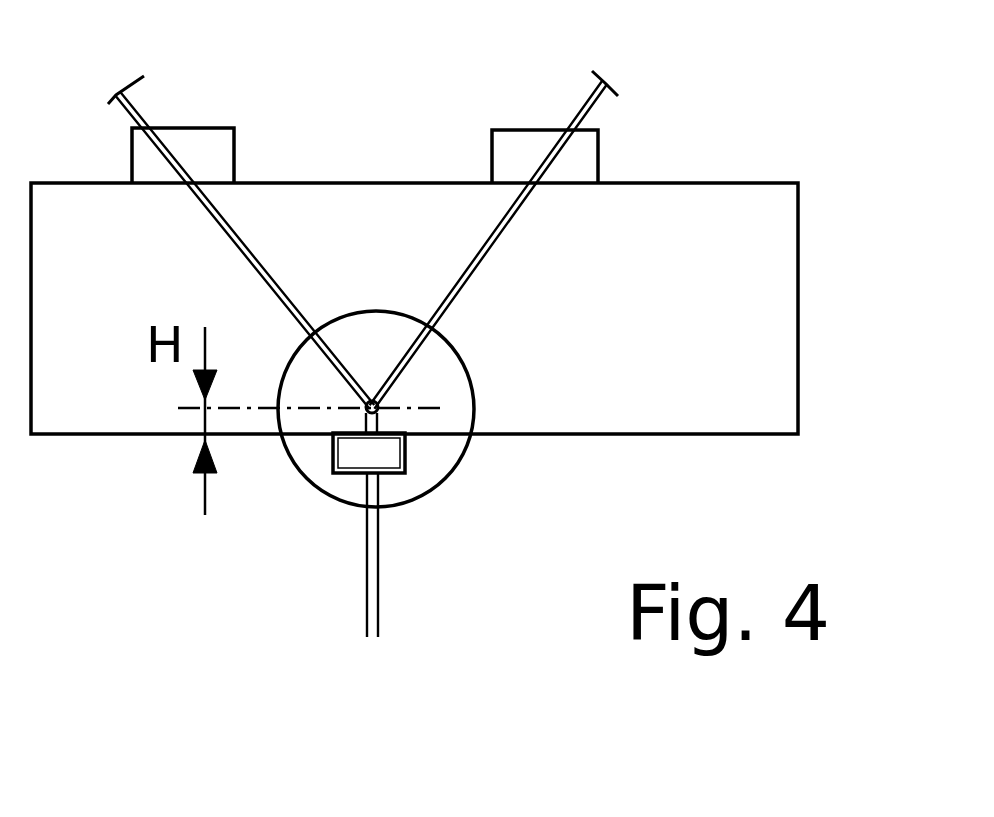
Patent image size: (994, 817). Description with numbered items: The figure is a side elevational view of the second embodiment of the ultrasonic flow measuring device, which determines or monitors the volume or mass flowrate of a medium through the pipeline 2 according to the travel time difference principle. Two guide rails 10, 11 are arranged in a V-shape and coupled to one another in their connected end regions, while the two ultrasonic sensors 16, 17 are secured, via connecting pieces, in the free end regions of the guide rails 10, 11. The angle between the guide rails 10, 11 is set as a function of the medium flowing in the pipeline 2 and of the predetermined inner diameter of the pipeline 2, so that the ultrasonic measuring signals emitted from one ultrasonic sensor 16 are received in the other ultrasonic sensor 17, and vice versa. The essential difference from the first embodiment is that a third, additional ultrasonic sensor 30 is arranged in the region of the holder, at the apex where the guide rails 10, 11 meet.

The pipeline 2 is at (800, 312).
The guide rail 10 is at (500, 258).
The guide rail 11 is at (250, 259).
The ultrasonic sensor 16 is at (207, 150).
The ultrasonic sensor 17 is at (512, 145).
The third ultrasonic sensor 30 is at (353, 455).